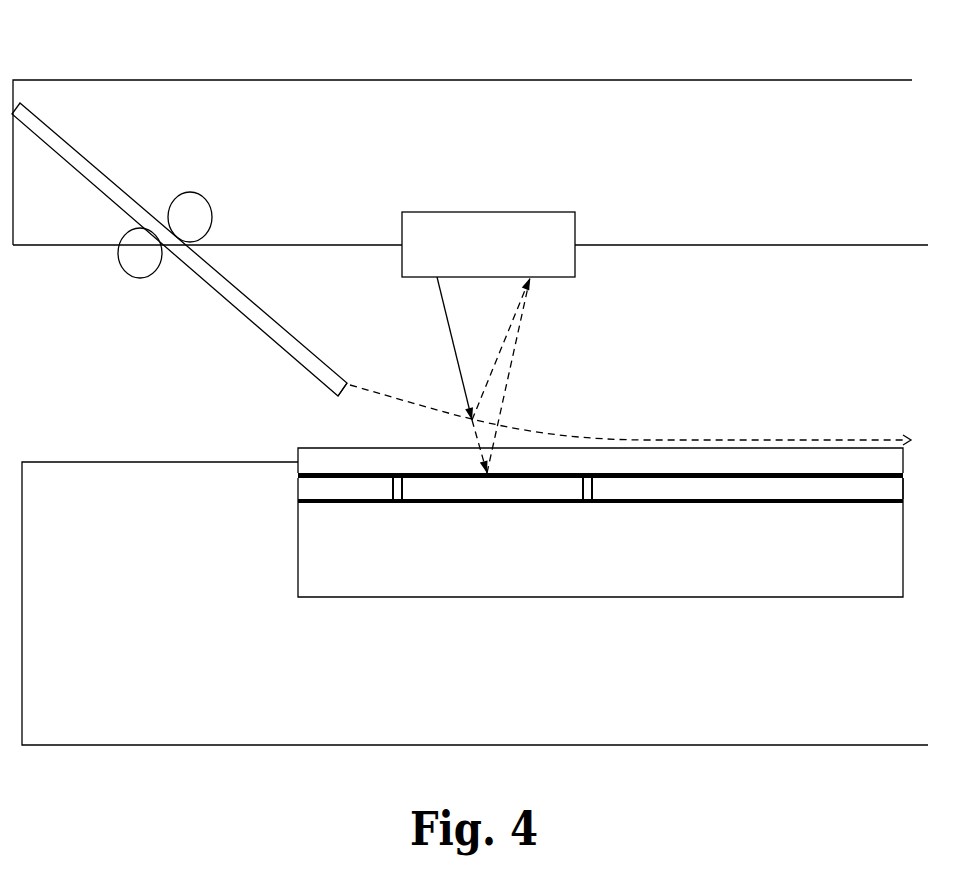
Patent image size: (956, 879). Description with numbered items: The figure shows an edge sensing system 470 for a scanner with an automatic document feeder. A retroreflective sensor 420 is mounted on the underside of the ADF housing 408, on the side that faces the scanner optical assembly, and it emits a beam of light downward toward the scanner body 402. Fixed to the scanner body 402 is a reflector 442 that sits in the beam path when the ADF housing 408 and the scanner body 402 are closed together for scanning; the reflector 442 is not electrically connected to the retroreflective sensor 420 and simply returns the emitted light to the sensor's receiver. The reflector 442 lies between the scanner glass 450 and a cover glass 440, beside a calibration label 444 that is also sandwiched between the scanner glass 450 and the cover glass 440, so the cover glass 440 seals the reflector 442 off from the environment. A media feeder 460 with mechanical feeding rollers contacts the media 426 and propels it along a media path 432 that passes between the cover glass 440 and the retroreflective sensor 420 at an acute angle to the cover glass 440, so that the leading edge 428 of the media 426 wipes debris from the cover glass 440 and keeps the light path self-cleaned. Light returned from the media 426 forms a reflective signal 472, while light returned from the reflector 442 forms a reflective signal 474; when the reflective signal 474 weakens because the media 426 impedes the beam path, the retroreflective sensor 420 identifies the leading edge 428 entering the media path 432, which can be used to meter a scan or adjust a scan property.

The scanner body 402 is at (120, 745).
The ADF housing 408 is at (523, 80).
The retroreflective sensor 420 is at (575, 212).
The media 426 is at (264, 311).
The leading edge 428 is at (333, 392).
The media path 432 is at (660, 437).
The cover glass 440 is at (341, 456).
The reflector 442 is at (505, 490).
The calibration label 444 is at (693, 488).
The scanner glass 450 is at (413, 586).
The media feeder 460 is at (140, 278).
The edge sensing system 470 is at (148, 50).
The reflective signal 472 is at (508, 328).
The reflective signal 474 is at (506, 378).